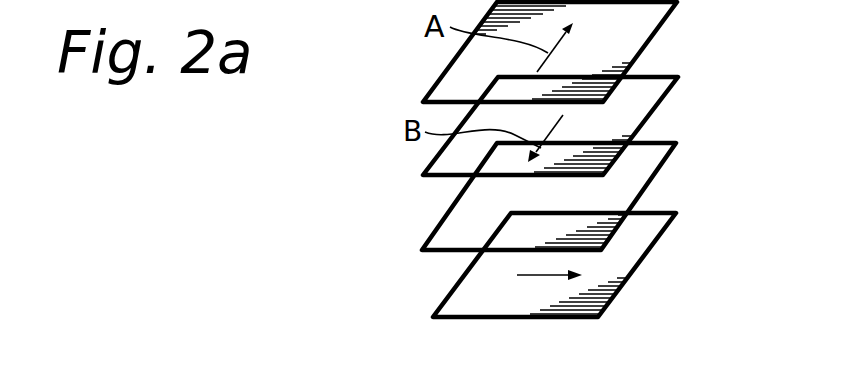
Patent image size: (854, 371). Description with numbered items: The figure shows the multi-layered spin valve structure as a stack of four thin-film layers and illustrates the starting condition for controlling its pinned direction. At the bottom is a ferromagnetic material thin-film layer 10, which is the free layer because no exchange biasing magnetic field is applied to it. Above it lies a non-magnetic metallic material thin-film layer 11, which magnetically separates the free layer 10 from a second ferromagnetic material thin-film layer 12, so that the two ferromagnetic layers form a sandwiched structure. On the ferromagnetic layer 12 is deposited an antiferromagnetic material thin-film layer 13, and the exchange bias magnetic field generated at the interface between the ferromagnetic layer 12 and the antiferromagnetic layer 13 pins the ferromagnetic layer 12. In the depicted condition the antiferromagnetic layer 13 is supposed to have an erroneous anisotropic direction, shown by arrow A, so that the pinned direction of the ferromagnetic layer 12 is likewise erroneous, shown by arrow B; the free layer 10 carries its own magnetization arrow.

The ferromagnetic material thin-film layer (free layer) 10 is at (630, 251).
The non-magnetic metallic material thin-film layer 11 is at (630, 177).
The ferromagnetic material thin-film layer (pinned layer) 12 is at (637, 100).
The antiferromagnetic material thin-film layer 13 is at (637, 34).